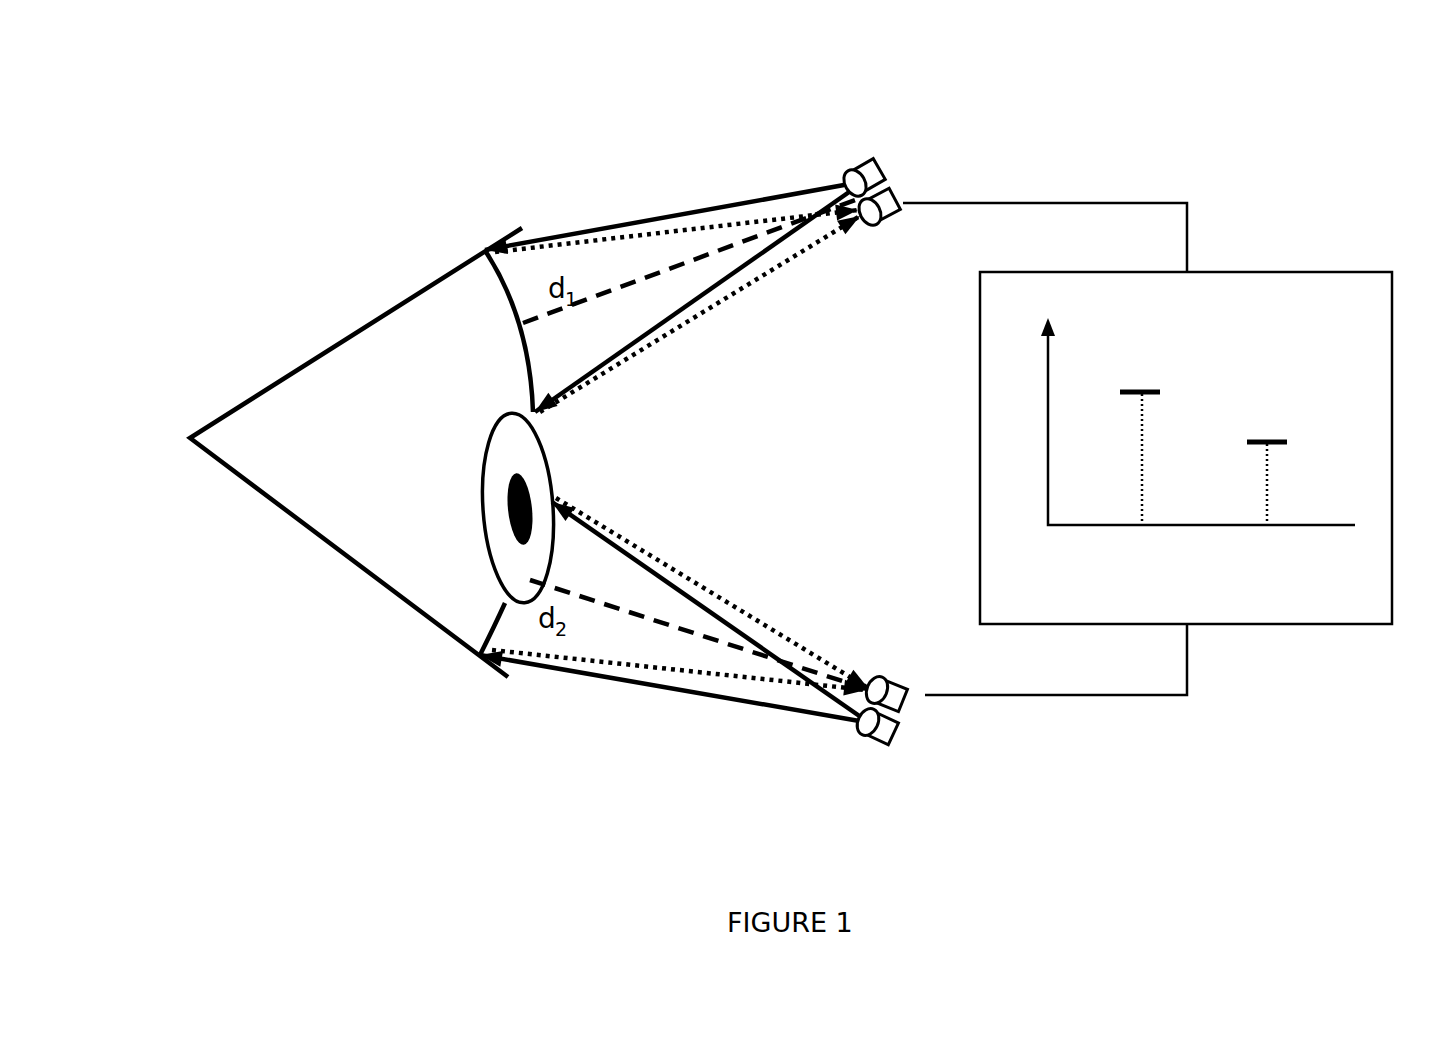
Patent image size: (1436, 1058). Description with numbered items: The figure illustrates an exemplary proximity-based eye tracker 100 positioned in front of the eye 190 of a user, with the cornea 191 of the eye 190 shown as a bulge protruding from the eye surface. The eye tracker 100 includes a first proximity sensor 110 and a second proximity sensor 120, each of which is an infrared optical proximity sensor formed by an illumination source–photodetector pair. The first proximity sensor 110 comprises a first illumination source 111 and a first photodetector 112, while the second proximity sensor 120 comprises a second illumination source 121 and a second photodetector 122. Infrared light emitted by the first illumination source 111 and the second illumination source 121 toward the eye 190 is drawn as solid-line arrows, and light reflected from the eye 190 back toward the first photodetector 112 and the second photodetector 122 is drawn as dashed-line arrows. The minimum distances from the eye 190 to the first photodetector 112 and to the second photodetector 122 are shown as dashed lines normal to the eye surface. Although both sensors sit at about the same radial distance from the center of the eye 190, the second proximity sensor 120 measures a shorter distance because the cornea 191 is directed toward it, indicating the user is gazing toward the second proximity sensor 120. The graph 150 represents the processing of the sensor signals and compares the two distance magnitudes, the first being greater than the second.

The proximity-based eye tracker 100 is at (255, 160).
The first proximity sensor 110 is at (914, 195).
The first illumination source 111 is at (866, 167).
The first photodetector 112 is at (893, 222).
The second proximity sensor 120 is at (931, 711).
The second illumination source 121 is at (894, 754).
The second photodetector 122 is at (903, 682).
The graph 150 is at (1186, 448).
The eye 190 is at (375, 452).
The cornea 191 is at (553, 455).